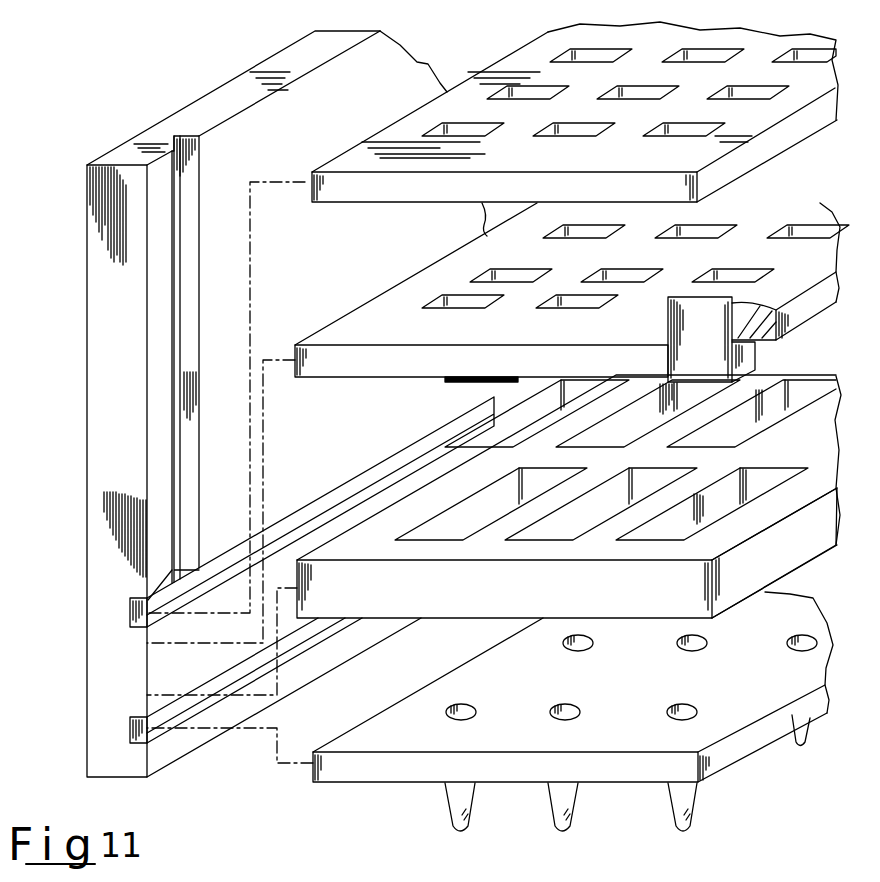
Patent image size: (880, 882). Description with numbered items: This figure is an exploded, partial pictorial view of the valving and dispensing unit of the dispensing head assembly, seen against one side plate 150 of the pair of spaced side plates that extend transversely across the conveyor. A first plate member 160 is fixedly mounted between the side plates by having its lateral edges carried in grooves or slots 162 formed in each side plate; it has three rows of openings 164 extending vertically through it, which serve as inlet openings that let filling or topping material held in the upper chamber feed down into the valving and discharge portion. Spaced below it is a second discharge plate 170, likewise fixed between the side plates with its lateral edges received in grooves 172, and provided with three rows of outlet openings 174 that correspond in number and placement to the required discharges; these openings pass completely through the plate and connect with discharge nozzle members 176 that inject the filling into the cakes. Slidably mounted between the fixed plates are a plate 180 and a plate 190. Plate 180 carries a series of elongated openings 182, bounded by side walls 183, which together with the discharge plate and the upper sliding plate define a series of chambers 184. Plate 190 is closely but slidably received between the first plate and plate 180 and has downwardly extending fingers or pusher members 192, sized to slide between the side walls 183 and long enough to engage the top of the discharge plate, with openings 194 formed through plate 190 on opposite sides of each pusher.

The side plate 150 is at (87, 553).
The first plate member 160 is at (575, 129).
The grooves or slots 162 is at (247, 535).
The openings 164 is at (513, 38).
The second discharge plate 170 is at (573, 711).
The grooves 172 is at (138, 692).
The outlet openings 174 is at (681, 650).
The discharge nozzle members 176 is at (448, 822).
The plate 180 is at (569, 511).
The elongated openings 182 is at (727, 527).
The side walls 183 is at (477, 483).
The chambers 184 is at (612, 443).
The plate 190 is at (572, 306).
The fingers or pusher members 192 is at (507, 383).
The openings 194 is at (480, 309).